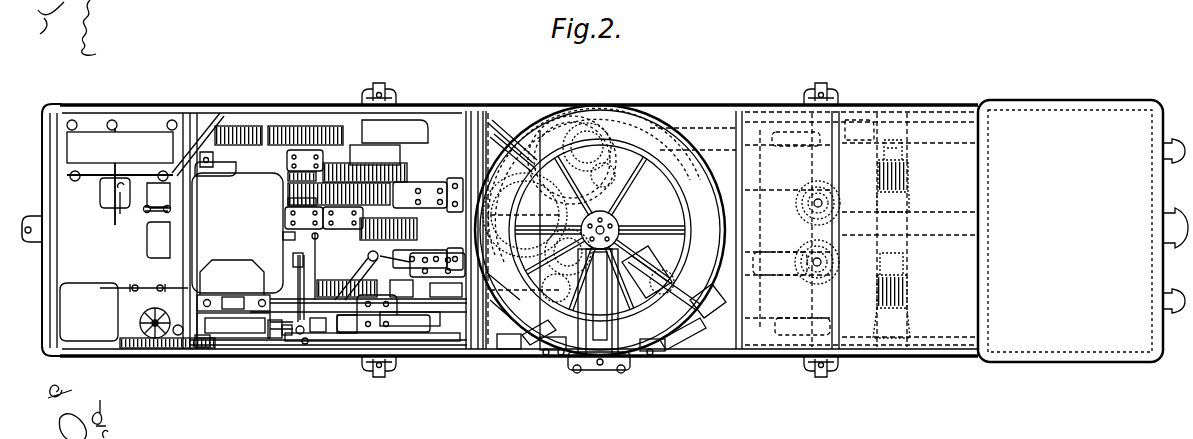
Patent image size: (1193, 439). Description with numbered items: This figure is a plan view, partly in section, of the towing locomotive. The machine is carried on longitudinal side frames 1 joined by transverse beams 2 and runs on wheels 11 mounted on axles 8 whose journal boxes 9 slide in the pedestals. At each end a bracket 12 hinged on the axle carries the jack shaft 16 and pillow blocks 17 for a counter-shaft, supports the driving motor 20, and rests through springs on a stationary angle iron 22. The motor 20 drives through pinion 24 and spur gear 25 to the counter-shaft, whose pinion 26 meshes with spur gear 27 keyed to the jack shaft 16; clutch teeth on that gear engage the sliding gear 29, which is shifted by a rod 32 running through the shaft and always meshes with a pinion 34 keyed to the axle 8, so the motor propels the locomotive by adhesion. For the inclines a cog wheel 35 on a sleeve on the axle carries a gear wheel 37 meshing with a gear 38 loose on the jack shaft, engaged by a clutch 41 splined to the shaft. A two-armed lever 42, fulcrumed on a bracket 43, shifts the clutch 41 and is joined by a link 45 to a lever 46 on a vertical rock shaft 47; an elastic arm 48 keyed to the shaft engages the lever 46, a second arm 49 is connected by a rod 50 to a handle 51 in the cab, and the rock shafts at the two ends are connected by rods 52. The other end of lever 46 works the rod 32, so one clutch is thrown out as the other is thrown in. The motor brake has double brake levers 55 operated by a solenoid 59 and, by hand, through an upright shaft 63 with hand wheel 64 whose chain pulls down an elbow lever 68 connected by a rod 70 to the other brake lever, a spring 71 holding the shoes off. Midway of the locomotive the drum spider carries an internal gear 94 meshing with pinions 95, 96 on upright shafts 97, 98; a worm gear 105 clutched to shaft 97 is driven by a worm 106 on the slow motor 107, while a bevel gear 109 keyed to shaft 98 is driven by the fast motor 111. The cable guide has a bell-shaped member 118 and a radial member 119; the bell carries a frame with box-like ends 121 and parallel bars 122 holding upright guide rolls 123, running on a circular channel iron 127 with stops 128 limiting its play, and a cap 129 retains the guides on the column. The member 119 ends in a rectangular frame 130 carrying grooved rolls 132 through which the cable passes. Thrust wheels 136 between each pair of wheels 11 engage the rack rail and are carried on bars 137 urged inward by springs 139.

The side frames 1 is at (480, 104).
The transverse beams 2 is at (466, 143).
The wheel axles 8 is at (363, 215).
The journal boxes 9 is at (379, 85).
The wheels 11 is at (418, 130).
The bracket 12 is at (392, 150).
The jack shaft 16 is at (283, 237).
The pillow blocks 17 is at (272, 215).
The driving motor 20 is at (237, 227).
The stationary angle iron 22 is at (186, 135).
The pinion 24 is at (248, 126).
The spur gear 25 is at (288, 126).
The pinion 26 is at (288, 202).
The spur gear 27 is at (390, 188).
The gear 29 is at (288, 178).
The rod 32 is at (353, 340).
The pinion 34 is at (407, 170).
The cog wheel 35 is at (417, 232).
The gear wheel 37 is at (413, 290).
The gear 38 is at (300, 306).
The clutch 41 is at (262, 270).
The two-armed lever 42 is at (327, 252).
The bracket 43 is at (400, 275).
The link 45 is at (293, 262).
The lever 46 is at (300, 335).
The vertical rock shaft 47 is at (318, 333).
The elastic arm 48 is at (305, 345).
The second arm 49 is at (383, 313).
The rod 50 is at (240, 296).
The handle 51 is at (131, 291).
The rods 52 is at (448, 297).
The brake levers 55 is at (245, 340).
The solenoid 59 is at (178, 348).
The upright shaft 63 is at (140, 323).
The hand wheel 64 is at (162, 348).
The elbow lever 68 is at (278, 340).
The rod 70 is at (200, 347).
The spring 71 is at (288, 336).
The internal gear 94 is at (680, 206).
The driving pinion 95 is at (563, 252).
The driving pinion 96 is at (603, 180).
The upright shaft 97 is at (568, 252).
The upright shaft 98 is at (592, 138).
The worm gear 105 is at (525, 215).
The worm 106 is at (508, 349).
The electric motor 107 is at (684, 345).
The bevel gear 109 is at (552, 124).
The electric motor 111 is at (703, 132).
The guide member 118 is at (648, 270).
The guide member 119 is at (624, 256).
The box-like ends 121 is at (690, 326).
The parallel bars 122 is at (556, 350).
The guide rolls 123 is at (650, 352).
The circular channel iron 127 is at (575, 108).
The stops 128 is at (604, 278).
The cap 129 is at (619, 226).
The upright rectangular frame 130 is at (588, 370).
The grooved rolls 132 is at (601, 371).
The thrust wheels 136 is at (806, 192).
The heavy bars 137 is at (783, 212).
The springs 139 is at (908, 172).